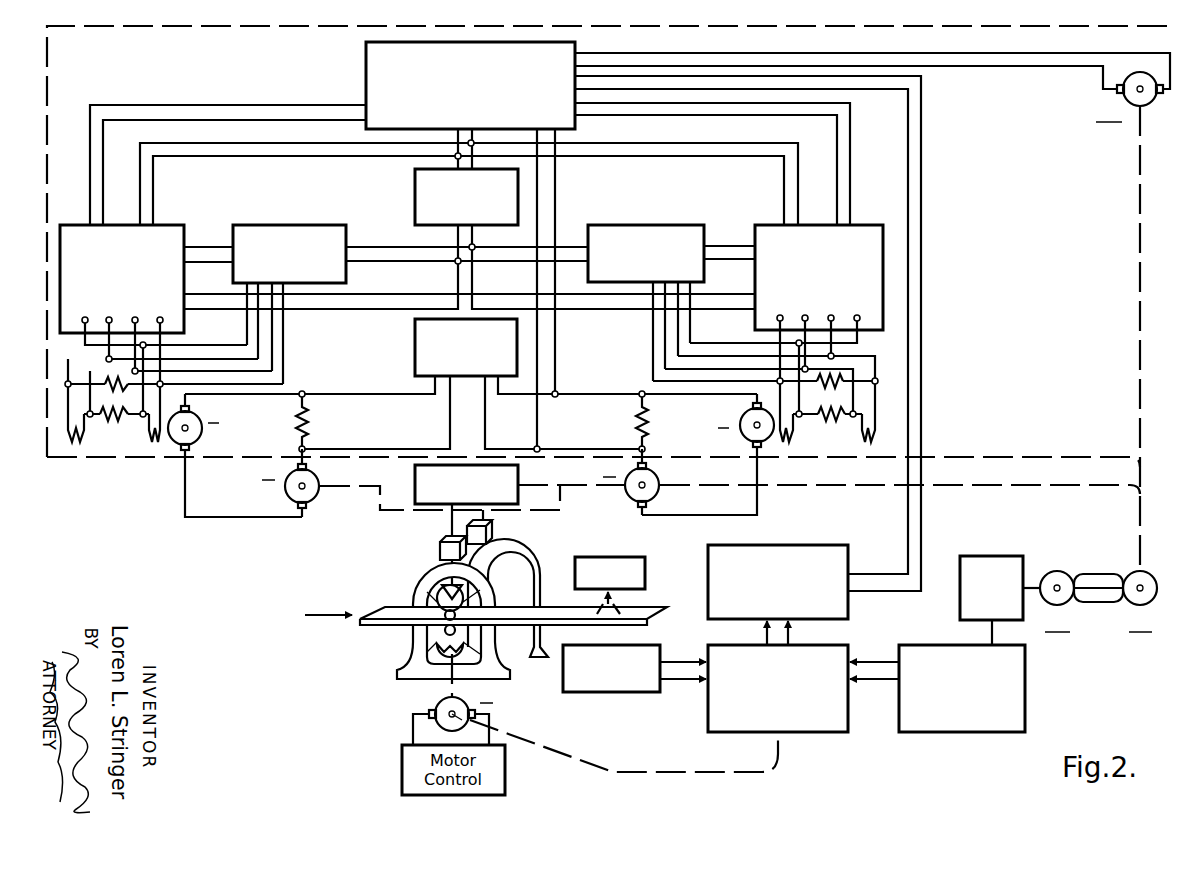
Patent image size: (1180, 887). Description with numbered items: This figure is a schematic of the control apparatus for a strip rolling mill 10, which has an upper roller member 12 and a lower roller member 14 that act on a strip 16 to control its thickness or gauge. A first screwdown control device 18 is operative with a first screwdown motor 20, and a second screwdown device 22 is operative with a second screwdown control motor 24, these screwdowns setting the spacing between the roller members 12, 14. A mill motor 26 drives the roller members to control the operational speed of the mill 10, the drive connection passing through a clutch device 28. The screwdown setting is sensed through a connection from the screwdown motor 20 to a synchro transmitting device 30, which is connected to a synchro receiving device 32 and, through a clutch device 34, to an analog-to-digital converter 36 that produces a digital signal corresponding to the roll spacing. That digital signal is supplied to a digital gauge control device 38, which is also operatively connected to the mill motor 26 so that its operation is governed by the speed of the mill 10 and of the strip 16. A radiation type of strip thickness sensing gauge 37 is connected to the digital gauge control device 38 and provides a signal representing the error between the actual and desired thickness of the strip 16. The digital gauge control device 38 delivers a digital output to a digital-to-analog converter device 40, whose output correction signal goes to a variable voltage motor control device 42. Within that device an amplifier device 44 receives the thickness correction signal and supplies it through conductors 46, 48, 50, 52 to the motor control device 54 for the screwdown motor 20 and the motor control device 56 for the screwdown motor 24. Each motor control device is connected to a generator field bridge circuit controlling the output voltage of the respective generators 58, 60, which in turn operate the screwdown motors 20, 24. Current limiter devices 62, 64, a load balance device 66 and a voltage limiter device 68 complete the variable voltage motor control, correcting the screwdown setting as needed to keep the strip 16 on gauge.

The strip rolling mill 10 is at (378, 589).
The upper roller member 12 is at (447, 611).
The lower roller member 14 is at (445, 630).
The strip 16 is at (374, 617).
The first screwdown control device 18 is at (492, 530).
The first screwdown motor 20 is at (632, 491).
The second screwdown device 22 is at (440, 549).
The second screwdown control motor 24 is at (311, 495).
The mill motor 26 is at (441, 702).
The clutch device 28 is at (519, 492).
The synchro transmitting device 30 is at (1145, 573).
The synchro receiving device 32 is at (1081, 591).
The clutch device 34 is at (990, 555).
The analog-to-digital converter 36 is at (1025, 660).
The radiation type strip thickness sensing gauge 37 is at (651, 644).
The digital gauge control device 38 is at (800, 731).
The digital-to-analog converter device 40 is at (801, 544).
The variable voltage motor control device 42 is at (121, 460).
The amplifier device 44 is at (366, 44).
The conductor 46 is at (679, 155).
The conductor 48 is at (708, 141).
The conductor 50 is at (291, 142).
The conductor 52 is at (309, 151).
The motor control device 54 is at (777, 223).
The motor control device 56 is at (164, 224).
The generator 58 is at (708, 454).
The generator 60 is at (203, 428).
The current limiter device 62 is at (677, 223).
The current limiter device 64 is at (302, 224).
The load balance device 66 is at (415, 334).
The voltage limiter device 68 is at (415, 188).